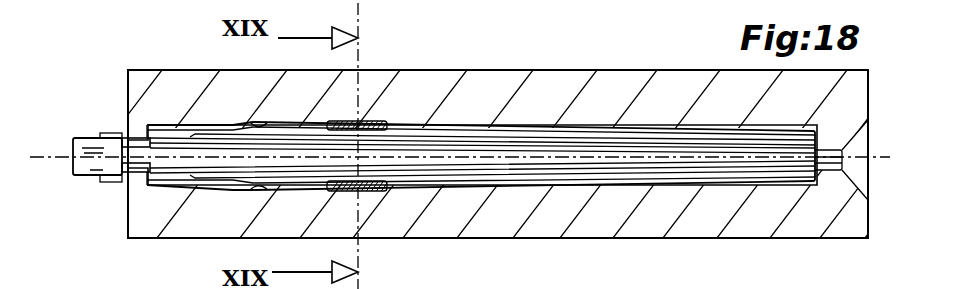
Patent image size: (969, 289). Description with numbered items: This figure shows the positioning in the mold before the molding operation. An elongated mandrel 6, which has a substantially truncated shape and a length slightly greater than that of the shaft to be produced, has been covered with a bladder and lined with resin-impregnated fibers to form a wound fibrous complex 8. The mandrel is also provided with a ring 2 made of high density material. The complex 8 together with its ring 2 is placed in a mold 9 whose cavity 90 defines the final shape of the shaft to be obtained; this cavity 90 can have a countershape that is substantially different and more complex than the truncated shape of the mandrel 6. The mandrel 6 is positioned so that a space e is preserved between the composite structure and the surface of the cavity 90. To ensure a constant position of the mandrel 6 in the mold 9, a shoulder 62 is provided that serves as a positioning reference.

The ring 2 is at (387, 123).
The space e is at (453, 132).
The mandrel 6 is at (66, 134).
The wound fibrous complex 8 is at (527, 128).
The mold 9 is at (605, 90).
The shoulder 62 is at (138, 136).
The cavity 90 is at (253, 122).